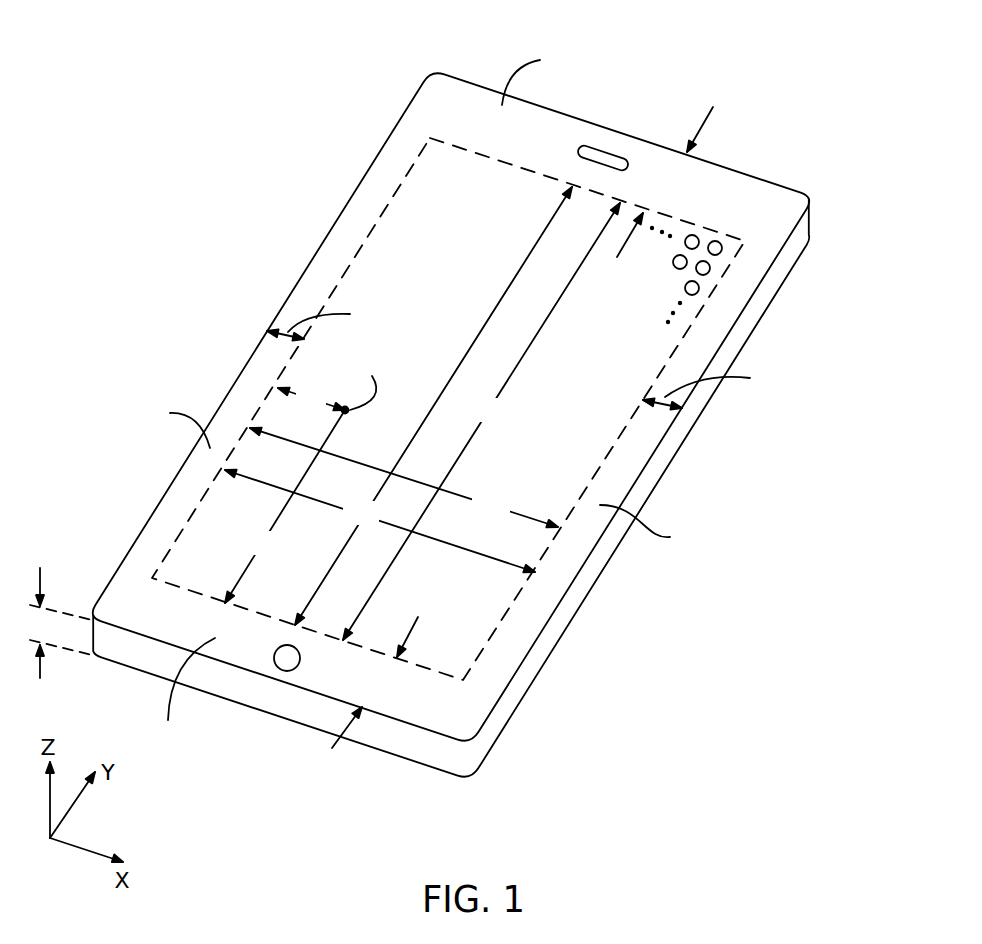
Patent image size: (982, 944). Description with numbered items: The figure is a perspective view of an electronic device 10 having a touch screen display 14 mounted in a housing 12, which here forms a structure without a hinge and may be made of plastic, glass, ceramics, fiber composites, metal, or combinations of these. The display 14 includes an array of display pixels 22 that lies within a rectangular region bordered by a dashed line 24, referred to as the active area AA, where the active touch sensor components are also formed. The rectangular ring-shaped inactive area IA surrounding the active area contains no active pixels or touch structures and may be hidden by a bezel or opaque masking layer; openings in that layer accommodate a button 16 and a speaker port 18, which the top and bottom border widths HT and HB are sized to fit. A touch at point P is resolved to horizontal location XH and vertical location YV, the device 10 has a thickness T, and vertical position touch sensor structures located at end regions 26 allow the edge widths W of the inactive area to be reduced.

The electronic device 10 is at (763, 53).
The housing 12 is at (811, 218).
The display 14 is at (448, 409).
The button 16 is at (280, 670).
The speaker port 18 is at (597, 150).
The display pixels 22 is at (723, 248).
The dashed line 24 is at (508, 617).
The end regions 26 is at (412, 73).